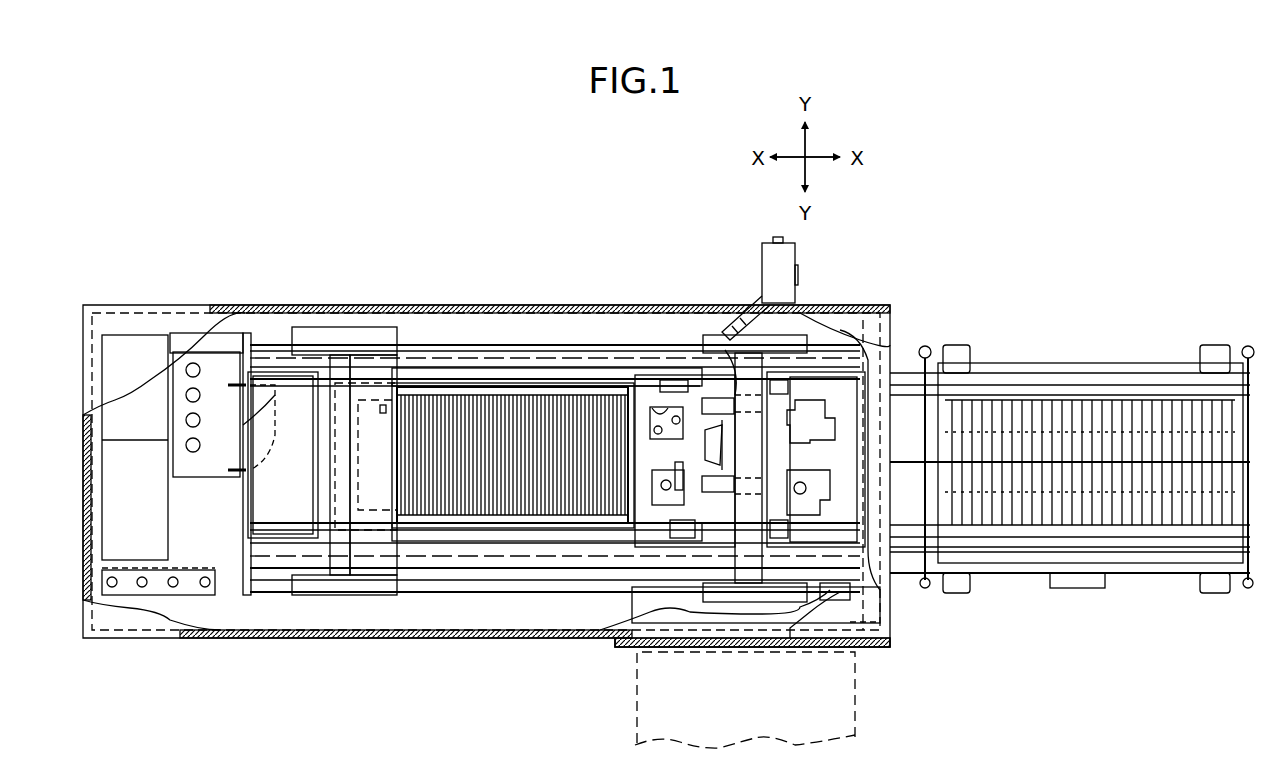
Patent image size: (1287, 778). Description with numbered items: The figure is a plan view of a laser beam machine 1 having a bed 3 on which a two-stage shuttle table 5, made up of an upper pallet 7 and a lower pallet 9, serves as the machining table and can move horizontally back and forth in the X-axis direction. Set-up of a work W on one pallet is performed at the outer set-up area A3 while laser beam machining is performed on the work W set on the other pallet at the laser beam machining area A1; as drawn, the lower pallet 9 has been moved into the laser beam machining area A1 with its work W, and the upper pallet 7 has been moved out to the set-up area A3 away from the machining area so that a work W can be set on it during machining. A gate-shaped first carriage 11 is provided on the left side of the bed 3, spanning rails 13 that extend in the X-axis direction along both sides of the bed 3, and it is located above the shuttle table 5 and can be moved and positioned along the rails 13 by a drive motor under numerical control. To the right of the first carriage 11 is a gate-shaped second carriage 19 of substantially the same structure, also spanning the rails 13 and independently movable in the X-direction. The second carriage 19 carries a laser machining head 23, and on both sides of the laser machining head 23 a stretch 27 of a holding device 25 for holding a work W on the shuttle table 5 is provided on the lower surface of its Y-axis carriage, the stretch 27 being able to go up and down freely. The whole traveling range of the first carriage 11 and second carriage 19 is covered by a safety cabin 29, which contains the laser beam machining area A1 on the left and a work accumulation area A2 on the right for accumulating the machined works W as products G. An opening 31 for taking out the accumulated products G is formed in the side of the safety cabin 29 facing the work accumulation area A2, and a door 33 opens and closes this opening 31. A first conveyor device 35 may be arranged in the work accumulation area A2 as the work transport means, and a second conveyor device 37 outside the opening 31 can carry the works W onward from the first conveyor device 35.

The laser beam machine 1 is at (226, 211).
The safety cabin 29 is at (130, 304).
The first carriage 11 is at (365, 328).
The work W is at (415, 384).
The bed 3 is at (450, 385).
The laser beam machining area A1 is at (510, 386).
The lower pallet 9 is at (551, 384).
The rails 13 is at (594, 344).
The work accumulation area A2 is at (650, 382).
The stretch 27 is at (718, 334).
The holding device 25 is at (739, 460).
The second carriage 19 is at (808, 340).
The laser machining head 23 is at (700, 462).
The products G is at (746, 462).
The opening 31 is at (628, 626).
The door 33 is at (617, 648).
The first conveyor device 35 is at (880, 618).
The second conveyor device 37 is at (857, 690).
The shuttle table 5 is at (1115, 358).
The upper pallet 7 is at (1060, 364).
The set-up area A3 is at (1012, 360).